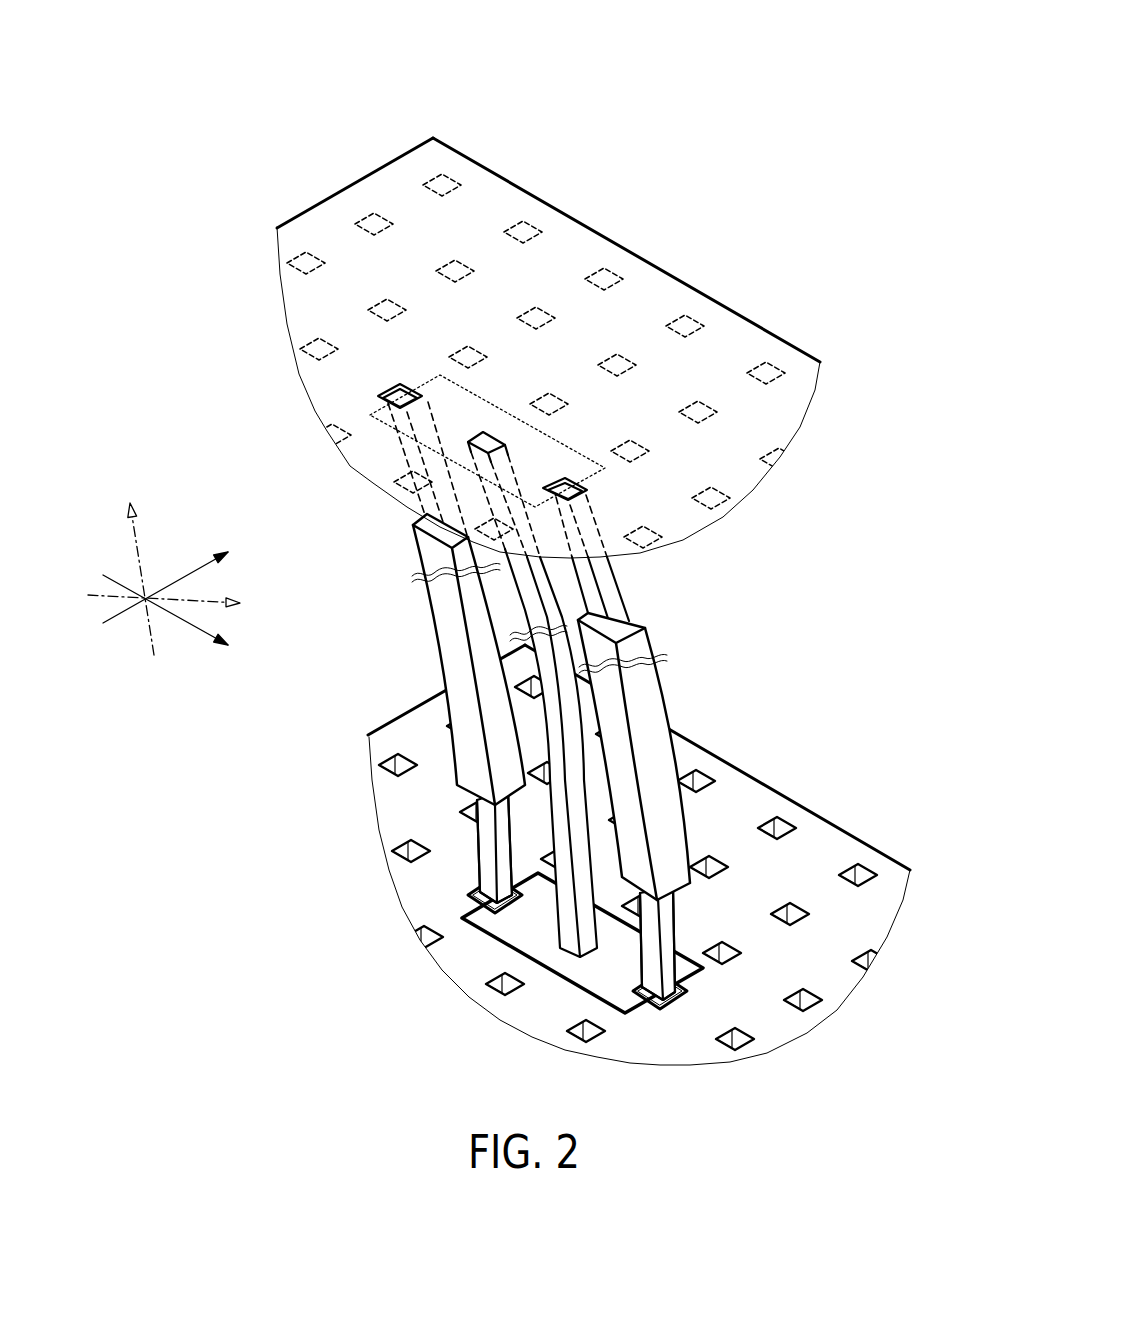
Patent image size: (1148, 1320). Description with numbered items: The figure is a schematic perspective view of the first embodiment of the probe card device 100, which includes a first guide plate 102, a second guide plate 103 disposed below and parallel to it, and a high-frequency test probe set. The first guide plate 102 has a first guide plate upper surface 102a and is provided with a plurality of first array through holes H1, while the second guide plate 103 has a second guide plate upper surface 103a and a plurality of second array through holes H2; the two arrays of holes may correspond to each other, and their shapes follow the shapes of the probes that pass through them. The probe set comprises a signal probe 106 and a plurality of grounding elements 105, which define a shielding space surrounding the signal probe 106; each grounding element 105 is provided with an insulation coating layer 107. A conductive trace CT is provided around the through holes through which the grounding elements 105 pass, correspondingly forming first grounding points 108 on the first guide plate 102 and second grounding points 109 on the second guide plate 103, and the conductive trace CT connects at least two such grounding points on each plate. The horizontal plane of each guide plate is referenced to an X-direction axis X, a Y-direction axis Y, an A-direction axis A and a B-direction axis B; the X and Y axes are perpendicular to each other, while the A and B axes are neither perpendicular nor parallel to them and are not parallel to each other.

The probe card device 100 is at (708, 129).
The first guide plate 102 is at (572, 247).
The first guide plate upper surface 102a is at (685, 276).
The second guide plate 103 is at (848, 848).
The second guide plate upper surface 103a is at (780, 789).
The grounding element 105 is at (407, 455).
The signal probe 106 is at (542, 590).
The insulation coating layer 107 is at (445, 622).
The first grounding point 108 is at (400, 386).
The second grounding point 109 is at (477, 898).
The first array through holes H1 is at (435, 172).
The second array through holes H2 is at (406, 749).
The conductive trace CT is at (560, 993).
The X-direction axis X is at (177, 581).
The Y-direction axis Y is at (179, 621).
The A-direction axis A is at (173, 607).
The B-direction axis B is at (135, 564).